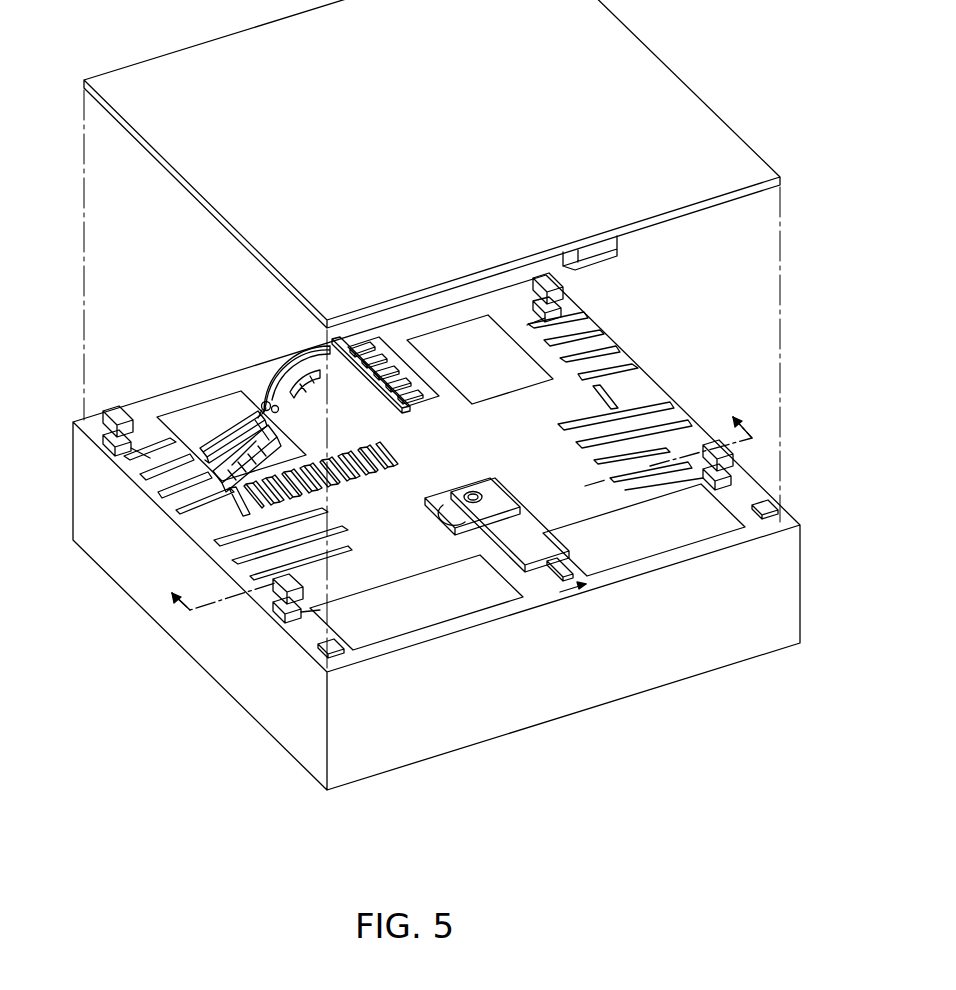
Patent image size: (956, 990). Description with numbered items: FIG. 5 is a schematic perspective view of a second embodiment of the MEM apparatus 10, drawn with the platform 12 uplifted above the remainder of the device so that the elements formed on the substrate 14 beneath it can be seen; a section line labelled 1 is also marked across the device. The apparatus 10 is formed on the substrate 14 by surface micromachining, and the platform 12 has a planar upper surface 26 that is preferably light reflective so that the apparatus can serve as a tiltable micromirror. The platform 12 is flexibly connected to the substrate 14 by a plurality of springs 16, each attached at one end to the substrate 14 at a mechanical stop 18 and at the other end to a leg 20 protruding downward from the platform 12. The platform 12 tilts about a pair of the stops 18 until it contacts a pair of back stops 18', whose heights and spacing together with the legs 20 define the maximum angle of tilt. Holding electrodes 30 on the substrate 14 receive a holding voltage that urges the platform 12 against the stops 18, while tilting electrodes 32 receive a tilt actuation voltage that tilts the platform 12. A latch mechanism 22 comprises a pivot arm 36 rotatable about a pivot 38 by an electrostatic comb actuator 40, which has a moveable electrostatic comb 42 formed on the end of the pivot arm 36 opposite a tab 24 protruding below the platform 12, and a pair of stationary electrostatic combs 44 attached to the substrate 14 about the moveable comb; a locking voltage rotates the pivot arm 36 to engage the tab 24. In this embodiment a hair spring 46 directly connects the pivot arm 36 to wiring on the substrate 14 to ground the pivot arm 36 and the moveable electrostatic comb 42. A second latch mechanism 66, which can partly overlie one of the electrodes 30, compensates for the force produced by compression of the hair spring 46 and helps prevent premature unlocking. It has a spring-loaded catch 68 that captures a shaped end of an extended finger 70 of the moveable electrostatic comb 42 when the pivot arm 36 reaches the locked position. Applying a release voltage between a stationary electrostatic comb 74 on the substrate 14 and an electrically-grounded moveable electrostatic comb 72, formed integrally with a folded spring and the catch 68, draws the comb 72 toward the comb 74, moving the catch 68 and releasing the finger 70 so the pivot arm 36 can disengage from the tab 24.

The MEM apparatus 10 is at (567, 745).
The platform 12 is at (222, 222).
The substrate 14 is at (565, 652).
The springs 16 is at (242, 515).
The mechanical stops 18 is at (413, 474).
The back stops 18' is at (557, 600).
The legs 20 is at (278, 600).
The latch mechanism 22 is at (427, 503).
The tab 24 is at (592, 257).
The upper surface 26 is at (337, 264).
The holding electrodes 30 is at (480, 359).
The tilting electrodes 32 is at (527, 567).
The pivot arm 36 is at (518, 535).
The pivot 38 is at (480, 490).
The electrostatic comb actuator 40 is at (275, 368).
The moveable electrostatic comb 42 is at (323, 353).
The stationary electrostatic combs 44 is at (420, 395).
The hair spring 46 is at (355, 480).
The second latch mechanism 66 is at (222, 420).
The spring-loaded catch 68 is at (270, 422).
The extended finger 70 is at (253, 403).
The moveable electrostatic comb 72 is at (227, 435).
The stationary electrostatic comb 74 is at (268, 448).
The section line 1- 1 is at (452, 502).